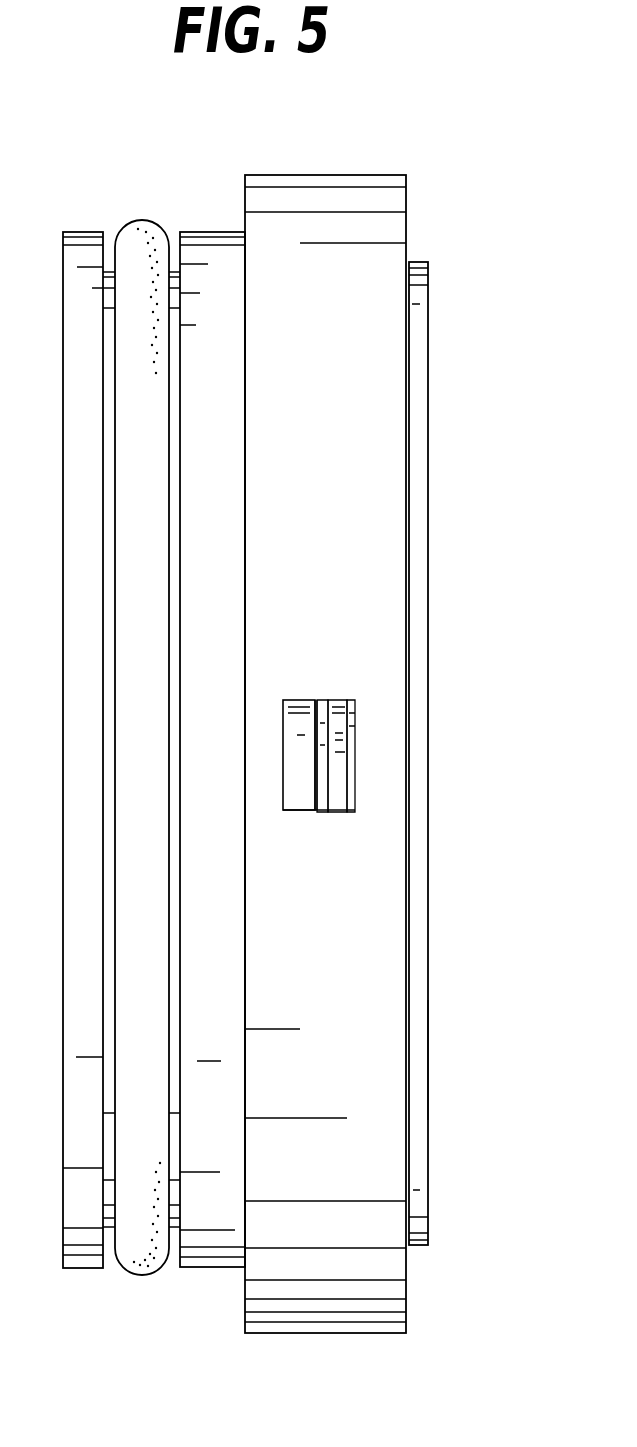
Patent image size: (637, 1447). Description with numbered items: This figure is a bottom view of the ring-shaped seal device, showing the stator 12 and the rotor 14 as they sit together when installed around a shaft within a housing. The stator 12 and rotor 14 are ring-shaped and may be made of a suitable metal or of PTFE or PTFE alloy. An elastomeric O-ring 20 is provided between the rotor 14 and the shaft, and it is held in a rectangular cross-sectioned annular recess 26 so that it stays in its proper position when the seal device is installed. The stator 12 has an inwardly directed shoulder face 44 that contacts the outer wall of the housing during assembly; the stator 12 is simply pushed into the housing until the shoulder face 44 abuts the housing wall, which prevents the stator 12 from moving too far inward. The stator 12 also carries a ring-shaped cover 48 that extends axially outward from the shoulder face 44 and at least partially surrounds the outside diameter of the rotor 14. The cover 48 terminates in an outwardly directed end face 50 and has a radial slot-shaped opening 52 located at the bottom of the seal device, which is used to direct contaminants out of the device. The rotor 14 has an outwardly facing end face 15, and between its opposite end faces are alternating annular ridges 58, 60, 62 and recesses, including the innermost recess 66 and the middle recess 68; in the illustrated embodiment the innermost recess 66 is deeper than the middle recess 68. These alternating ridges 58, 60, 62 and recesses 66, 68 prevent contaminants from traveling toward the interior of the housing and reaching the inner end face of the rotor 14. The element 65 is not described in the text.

The stator 12 is at (75, 232).
The rotor 14 is at (420, 392).
The outwardly facing end face 15 is at (430, 1062).
The O-ring 20 is at (157, 417).
The annular recess 26 is at (196, 325).
The shoulder face 44 is at (246, 483).
The cover 48 is at (385, 340).
The end face 50 is at (406, 1293).
The opening 52 is at (318, 702).
The annular ridge 58 is at (285, 703).
The annular ridge 60 is at (320, 800).
The annular ridge 62 is at (355, 790).
The plate top portion 65 is at (413, 262).
The innermost recess 66 is at (293, 709).
The middle recess 68 is at (345, 757).